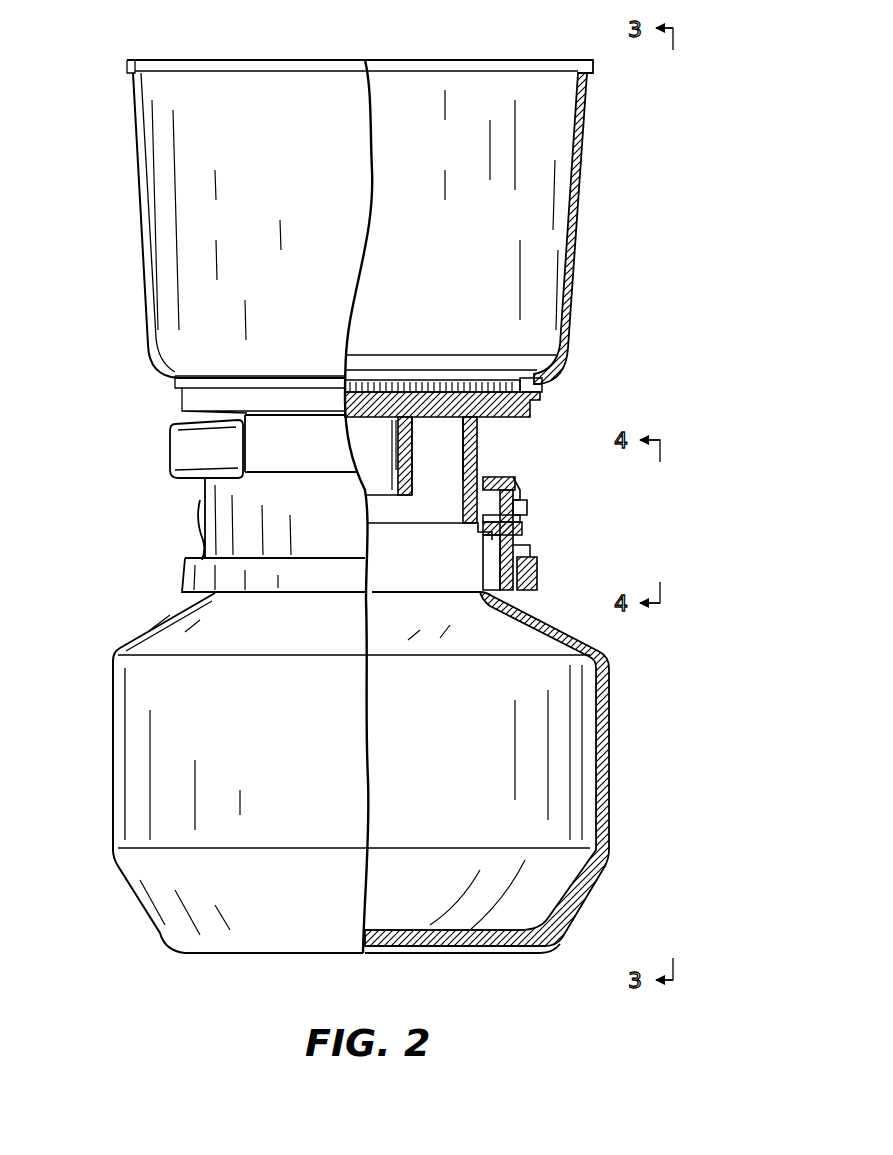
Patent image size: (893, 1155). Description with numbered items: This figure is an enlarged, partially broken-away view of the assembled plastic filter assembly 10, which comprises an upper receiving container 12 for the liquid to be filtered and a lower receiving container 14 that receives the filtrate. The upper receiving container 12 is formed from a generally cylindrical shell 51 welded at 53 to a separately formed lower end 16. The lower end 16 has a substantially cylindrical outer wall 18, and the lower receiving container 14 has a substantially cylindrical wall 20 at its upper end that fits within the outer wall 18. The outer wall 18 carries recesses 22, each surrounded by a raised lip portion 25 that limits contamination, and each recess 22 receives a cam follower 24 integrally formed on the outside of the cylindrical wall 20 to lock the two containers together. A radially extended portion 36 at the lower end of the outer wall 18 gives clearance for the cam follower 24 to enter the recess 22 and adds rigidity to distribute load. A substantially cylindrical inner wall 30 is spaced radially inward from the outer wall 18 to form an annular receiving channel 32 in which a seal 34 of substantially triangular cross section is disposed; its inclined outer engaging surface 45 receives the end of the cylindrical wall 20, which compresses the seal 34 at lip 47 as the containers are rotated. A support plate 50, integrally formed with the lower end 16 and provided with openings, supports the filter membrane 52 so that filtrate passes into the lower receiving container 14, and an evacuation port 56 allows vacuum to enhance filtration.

The plastic filter assembly 10 is at (598, 298).
The upper receiving container 12 is at (155, 232).
The lower receiving container 14 is at (612, 720).
The lower end 16 is at (500, 477).
The substantially cylindrical outer wall 18 is at (517, 482).
The substantially cylindrical wall 20 is at (488, 594).
The recess 22 is at (521, 519).
The cam follower 24 is at (517, 530).
The raised lip portion 25 is at (526, 508).
The substantially cylindrical inner wall 30 is at (470, 496).
The annular receiving channel 32 is at (484, 526).
The seal 34 is at (468, 475).
The radially extended portion 36 is at (538, 575).
The outer engaging surface 45 is at (490, 518).
The lip 47 is at (506, 490).
The support plate 50 is at (375, 388).
The generally cylindrical shell 51 is at (578, 242).
The filter membrane 52 is at (455, 380).
The weld location 53 is at (530, 378).
The evacuation port 56 is at (172, 480).